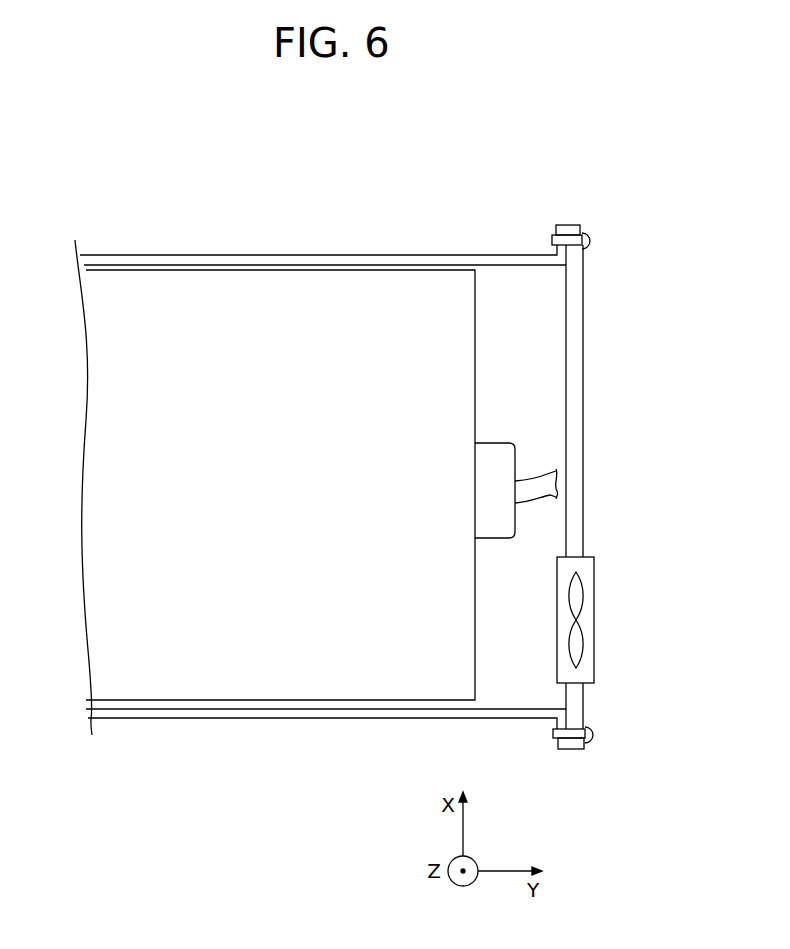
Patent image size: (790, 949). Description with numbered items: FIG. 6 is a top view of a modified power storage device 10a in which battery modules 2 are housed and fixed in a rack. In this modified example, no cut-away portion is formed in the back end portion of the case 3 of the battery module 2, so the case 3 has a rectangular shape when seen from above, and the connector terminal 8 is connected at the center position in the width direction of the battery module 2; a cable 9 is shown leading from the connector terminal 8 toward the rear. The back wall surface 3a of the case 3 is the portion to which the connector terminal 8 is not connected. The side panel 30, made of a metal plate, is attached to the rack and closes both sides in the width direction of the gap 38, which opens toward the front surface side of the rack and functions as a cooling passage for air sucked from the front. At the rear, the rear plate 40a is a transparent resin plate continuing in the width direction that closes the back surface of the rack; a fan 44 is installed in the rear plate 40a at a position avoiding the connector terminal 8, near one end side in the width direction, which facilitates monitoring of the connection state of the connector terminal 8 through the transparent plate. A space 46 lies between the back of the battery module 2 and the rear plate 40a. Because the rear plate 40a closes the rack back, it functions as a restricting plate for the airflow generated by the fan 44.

The power storage device 10a is at (320, 212).
The battery module 2 is at (188, 305).
The case 3 is at (268, 268).
The side panel 30 is at (376, 256).
The gap 38 is at (290, 411).
The rear plate 40a is at (585, 323).
The gap 46 is at (540, 358).
The back wall surface 3a is at (476, 392).
The connector terminal 8 is at (495, 530).
The cable 9 is at (537, 504).
The fan 44 is at (594, 630).